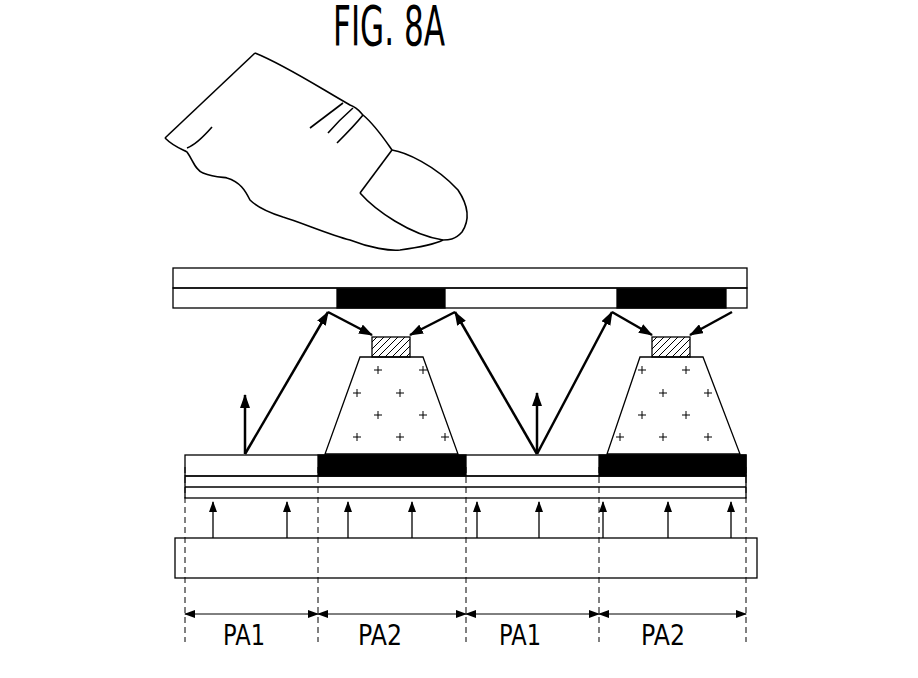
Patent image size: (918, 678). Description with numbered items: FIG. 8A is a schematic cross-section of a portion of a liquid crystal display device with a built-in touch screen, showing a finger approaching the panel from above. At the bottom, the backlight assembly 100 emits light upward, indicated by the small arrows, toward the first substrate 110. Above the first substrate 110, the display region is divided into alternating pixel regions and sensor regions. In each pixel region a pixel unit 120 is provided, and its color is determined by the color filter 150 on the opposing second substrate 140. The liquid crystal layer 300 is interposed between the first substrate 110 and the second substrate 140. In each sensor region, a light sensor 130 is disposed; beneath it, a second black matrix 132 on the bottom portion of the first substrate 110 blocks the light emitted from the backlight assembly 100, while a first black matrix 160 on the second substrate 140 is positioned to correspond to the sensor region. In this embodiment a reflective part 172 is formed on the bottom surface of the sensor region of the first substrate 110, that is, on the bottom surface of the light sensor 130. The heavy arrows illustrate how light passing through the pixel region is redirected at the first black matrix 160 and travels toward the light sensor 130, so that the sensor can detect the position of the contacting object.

The backlight assembly 100 is at (177, 563).
The first substrate 110 is at (197, 488).
The pixel unit 120 is at (197, 462).
The light sensor 130 is at (690, 347).
The second black matrix 132 is at (400, 455).
The second substrate 140 is at (728, 273).
The color filter 150 is at (185, 300).
The first black matrix 160 is at (665, 288).
The reflective part 172 is at (348, 447).
The liquid crystal layer 300 is at (212, 377).